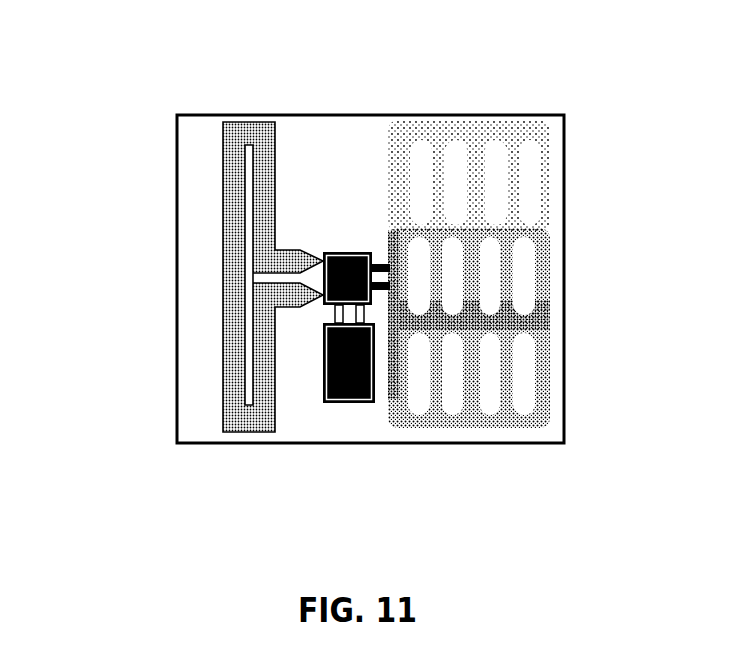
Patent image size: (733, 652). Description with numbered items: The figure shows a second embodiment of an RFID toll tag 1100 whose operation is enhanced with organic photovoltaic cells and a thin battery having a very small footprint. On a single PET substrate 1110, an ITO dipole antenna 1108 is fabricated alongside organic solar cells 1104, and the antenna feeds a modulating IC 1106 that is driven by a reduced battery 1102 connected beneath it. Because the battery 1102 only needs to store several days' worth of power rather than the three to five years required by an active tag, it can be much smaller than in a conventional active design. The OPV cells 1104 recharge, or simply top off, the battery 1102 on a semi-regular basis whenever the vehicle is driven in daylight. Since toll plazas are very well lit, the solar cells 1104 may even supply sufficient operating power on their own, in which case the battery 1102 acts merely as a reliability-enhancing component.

The tag 1100 is at (357, 320).
The battery 1102 is at (353, 405).
The organic solar cells 1104 is at (535, 274).
The modulating IC 1106 is at (354, 251).
The ITO dipole antenna 1108 is at (238, 189).
The substrate 1110 is at (203, 287).